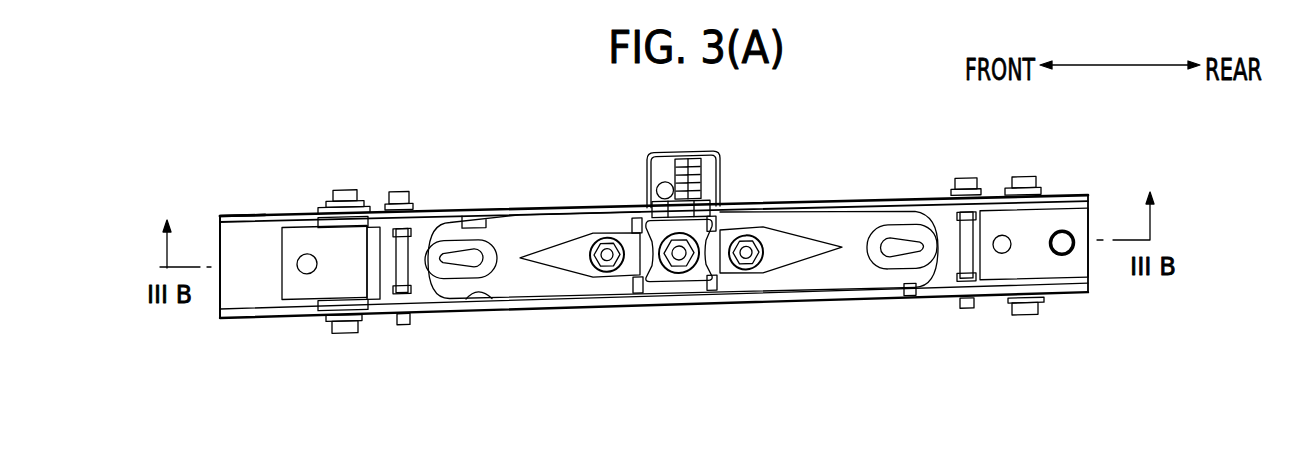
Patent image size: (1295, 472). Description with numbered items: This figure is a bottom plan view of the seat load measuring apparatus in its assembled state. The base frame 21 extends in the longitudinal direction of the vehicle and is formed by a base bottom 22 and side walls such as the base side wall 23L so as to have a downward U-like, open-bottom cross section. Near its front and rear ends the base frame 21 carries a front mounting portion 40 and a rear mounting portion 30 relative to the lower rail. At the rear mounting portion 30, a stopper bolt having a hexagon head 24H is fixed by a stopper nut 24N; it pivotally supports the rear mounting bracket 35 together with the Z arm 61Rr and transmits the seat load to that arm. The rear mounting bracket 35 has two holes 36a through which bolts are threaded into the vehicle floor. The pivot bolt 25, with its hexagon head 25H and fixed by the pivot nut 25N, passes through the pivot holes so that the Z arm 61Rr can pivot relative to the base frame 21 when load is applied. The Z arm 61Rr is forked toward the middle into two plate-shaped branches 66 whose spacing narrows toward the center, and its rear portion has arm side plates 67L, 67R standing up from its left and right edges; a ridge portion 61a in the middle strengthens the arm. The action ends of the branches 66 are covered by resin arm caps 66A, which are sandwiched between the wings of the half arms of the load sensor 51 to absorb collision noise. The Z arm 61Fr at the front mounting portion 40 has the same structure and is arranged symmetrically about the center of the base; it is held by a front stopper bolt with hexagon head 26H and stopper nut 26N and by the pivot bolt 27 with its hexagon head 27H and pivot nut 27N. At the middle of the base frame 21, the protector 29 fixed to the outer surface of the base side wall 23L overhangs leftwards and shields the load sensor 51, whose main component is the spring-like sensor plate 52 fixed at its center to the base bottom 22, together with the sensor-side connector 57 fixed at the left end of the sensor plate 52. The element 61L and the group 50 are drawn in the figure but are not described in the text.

The base frame 21 is at (244, 206).
The base bottom 22 is at (219, 228).
The base side wall 23L is at (218, 217).
The stopper nut 24N is at (1035, 184).
The hexagon head 24H is at (1035, 312).
The pivot bolt 25 is at (957, 223).
The pivot nut 25N is at (978, 183).
The hexagon head 25H is at (962, 312).
The stopper nut 26N is at (324, 190).
The hexagon head 26H is at (342, 334).
The pivot bolt 27 is at (403, 247).
The pivot nut 27N is at (383, 192).
The hexagon head 27H is at (423, 361).
The protector 29 is at (648, 152).
The mounting portion 30 is at (1021, 279).
The rear mounting bracket 35 is at (1094, 300).
The holes 36a is at (1001, 252).
The mounting portion 40 is at (389, 288).
The fastening portion 50 is at (684, 267).
The load sensor 51 is at (678, 296).
The sensor plate 52 is at (695, 277).
The sensor-side connector 57 is at (692, 152).
The ridge portion 61a is at (477, 260).
The Z arm 61Fr is at (517, 236).
The Z arm 61Rr is at (849, 233).
The link 61L is at (920, 206).
The branches 66 is at (554, 232).
The arm caps 66A is at (645, 208).
The arm side plate 67L is at (441, 213).
The arm side plate 67R is at (447, 310).